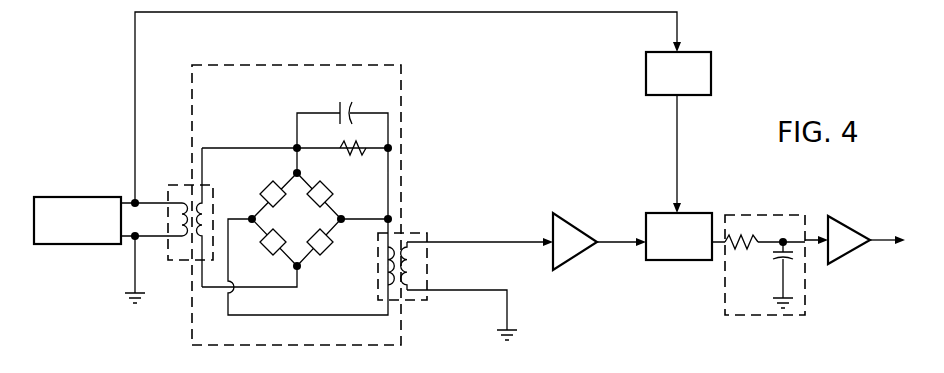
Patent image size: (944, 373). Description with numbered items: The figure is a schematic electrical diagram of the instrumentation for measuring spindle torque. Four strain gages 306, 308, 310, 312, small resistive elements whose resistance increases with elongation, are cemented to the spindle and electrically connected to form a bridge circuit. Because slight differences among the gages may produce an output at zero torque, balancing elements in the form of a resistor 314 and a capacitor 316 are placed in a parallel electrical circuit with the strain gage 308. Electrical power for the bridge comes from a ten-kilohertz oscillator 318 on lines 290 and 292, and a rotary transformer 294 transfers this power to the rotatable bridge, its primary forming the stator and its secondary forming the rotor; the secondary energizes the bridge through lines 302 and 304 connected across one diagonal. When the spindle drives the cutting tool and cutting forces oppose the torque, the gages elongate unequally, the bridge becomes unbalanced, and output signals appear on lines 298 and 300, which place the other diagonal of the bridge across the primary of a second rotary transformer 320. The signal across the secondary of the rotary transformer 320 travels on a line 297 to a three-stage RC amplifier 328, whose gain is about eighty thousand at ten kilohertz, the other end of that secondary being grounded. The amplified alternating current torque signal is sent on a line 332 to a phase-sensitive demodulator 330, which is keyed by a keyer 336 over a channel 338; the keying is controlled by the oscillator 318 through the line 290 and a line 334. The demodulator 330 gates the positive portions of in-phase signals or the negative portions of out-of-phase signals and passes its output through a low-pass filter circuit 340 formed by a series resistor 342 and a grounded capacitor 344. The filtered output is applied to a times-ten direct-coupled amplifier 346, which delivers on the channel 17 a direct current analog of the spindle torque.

The channel 17 is at (874, 238).
The line 290 is at (155, 202).
The line 292 is at (150, 238).
The rotary transformer 294 is at (190, 262).
The line 297 is at (444, 241).
The line 298 is at (386, 218).
The line 300 is at (270, 316).
The line 302 is at (243, 148).
The line 304 is at (216, 293).
The strain gage 306 is at (264, 189).
The strain gage 308 is at (333, 188).
The strain gage 310 is at (276, 254).
The strain gage 312 is at (326, 251).
The resistor 314 is at (349, 142).
The capacitor 316 is at (355, 108).
The oscillator 318 is at (60, 197).
The second rotary transformer 320 is at (422, 302).
The three-stage RC amplifier 328 is at (564, 214).
The phase-sensitive demodulator 330 is at (670, 260).
The line 332 is at (604, 244).
The line 334 is at (278, 12).
The keyer 336 is at (712, 68).
The channel 338 is at (678, 160).
The low-pass filter circuit 340 is at (760, 215).
The series resistor 342 is at (745, 244).
The grounded capacitor 344 is at (790, 264).
The direct-coupled amplifier 346 is at (846, 214).